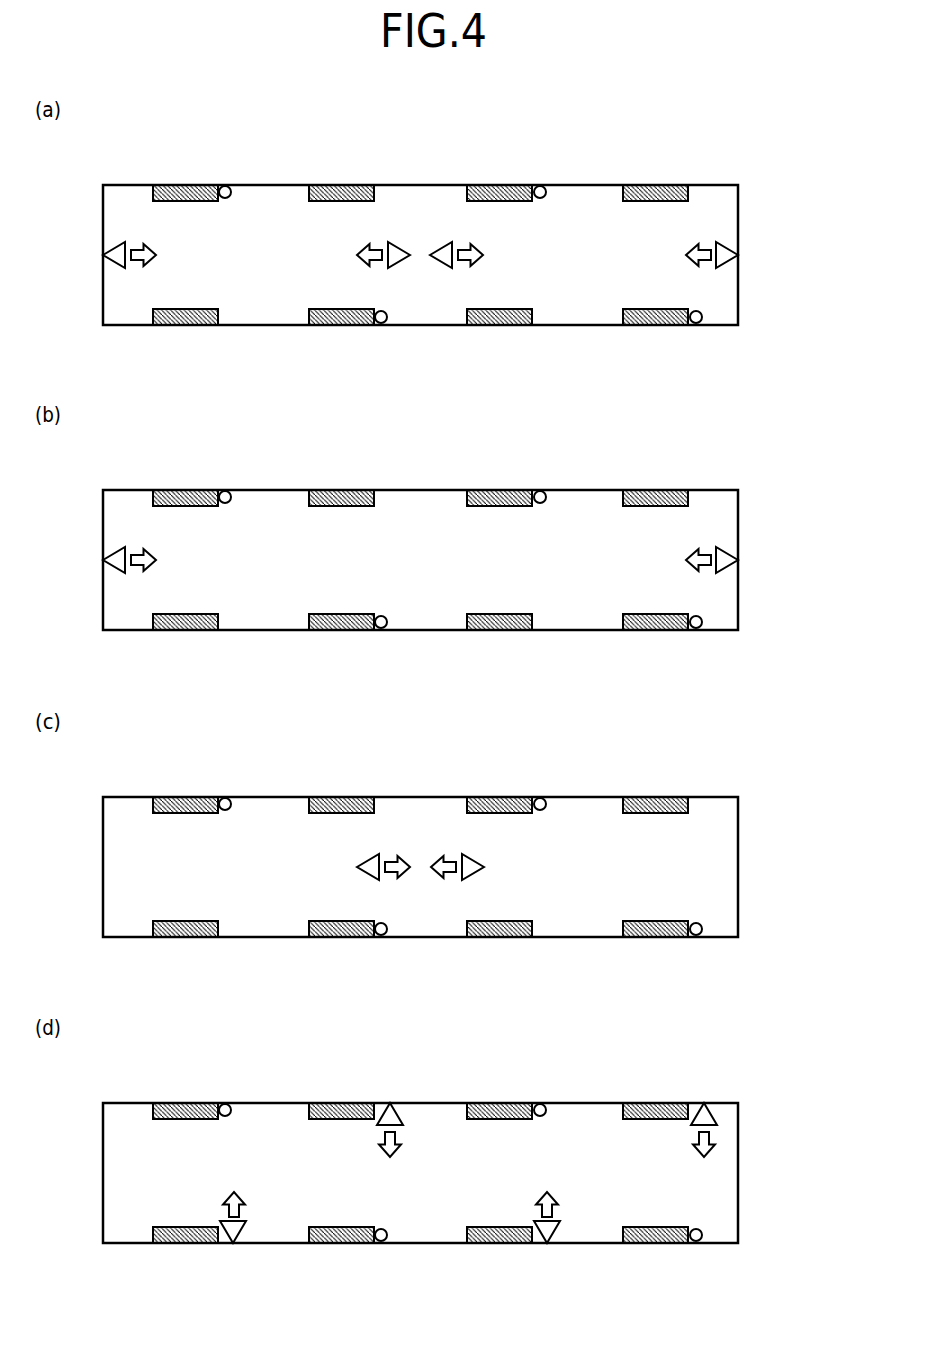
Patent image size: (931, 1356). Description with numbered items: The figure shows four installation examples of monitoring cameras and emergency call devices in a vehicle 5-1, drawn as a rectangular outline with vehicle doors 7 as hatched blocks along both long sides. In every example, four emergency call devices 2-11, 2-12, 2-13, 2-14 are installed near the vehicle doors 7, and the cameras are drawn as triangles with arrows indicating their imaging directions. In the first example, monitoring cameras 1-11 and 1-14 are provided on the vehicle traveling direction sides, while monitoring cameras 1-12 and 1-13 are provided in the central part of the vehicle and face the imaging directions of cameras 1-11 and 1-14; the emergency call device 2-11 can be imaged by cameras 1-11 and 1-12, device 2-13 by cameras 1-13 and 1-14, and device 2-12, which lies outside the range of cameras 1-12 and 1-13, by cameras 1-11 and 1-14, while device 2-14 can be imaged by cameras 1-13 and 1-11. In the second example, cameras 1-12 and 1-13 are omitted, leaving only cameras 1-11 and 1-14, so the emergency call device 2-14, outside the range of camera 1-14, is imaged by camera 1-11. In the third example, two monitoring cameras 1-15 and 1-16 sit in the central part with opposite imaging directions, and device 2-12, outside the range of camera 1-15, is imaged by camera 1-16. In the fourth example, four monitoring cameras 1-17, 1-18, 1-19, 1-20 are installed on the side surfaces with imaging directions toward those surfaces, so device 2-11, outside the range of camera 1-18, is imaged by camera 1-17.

The vehicle 5-1 is at (122, 184).
The vehicle door 7 is at (320, 192).
The emergency call device 2-11 is at (232, 193).
The emergency call device 2-12 is at (388, 317).
The emergency call device 2-13 is at (547, 193).
The emergency call device 2-14 is at (702, 317).
The monitoring camera 1-11 is at (103, 243).
The monitoring camera 1-12 is at (393, 243).
The monitoring camera 1-13 is at (444, 243).
The monitoring camera 1-14 is at (738, 245).
The monitoring camera 1-15 is at (377, 855).
The monitoring camera 1-16 is at (465, 855).
The monitoring camera 1-17 is at (243, 1233).
The monitoring camera 1-18 is at (398, 1113).
The monitoring camera 1-19 is at (556, 1233).
The monitoring camera 1-20 is at (712, 1112).